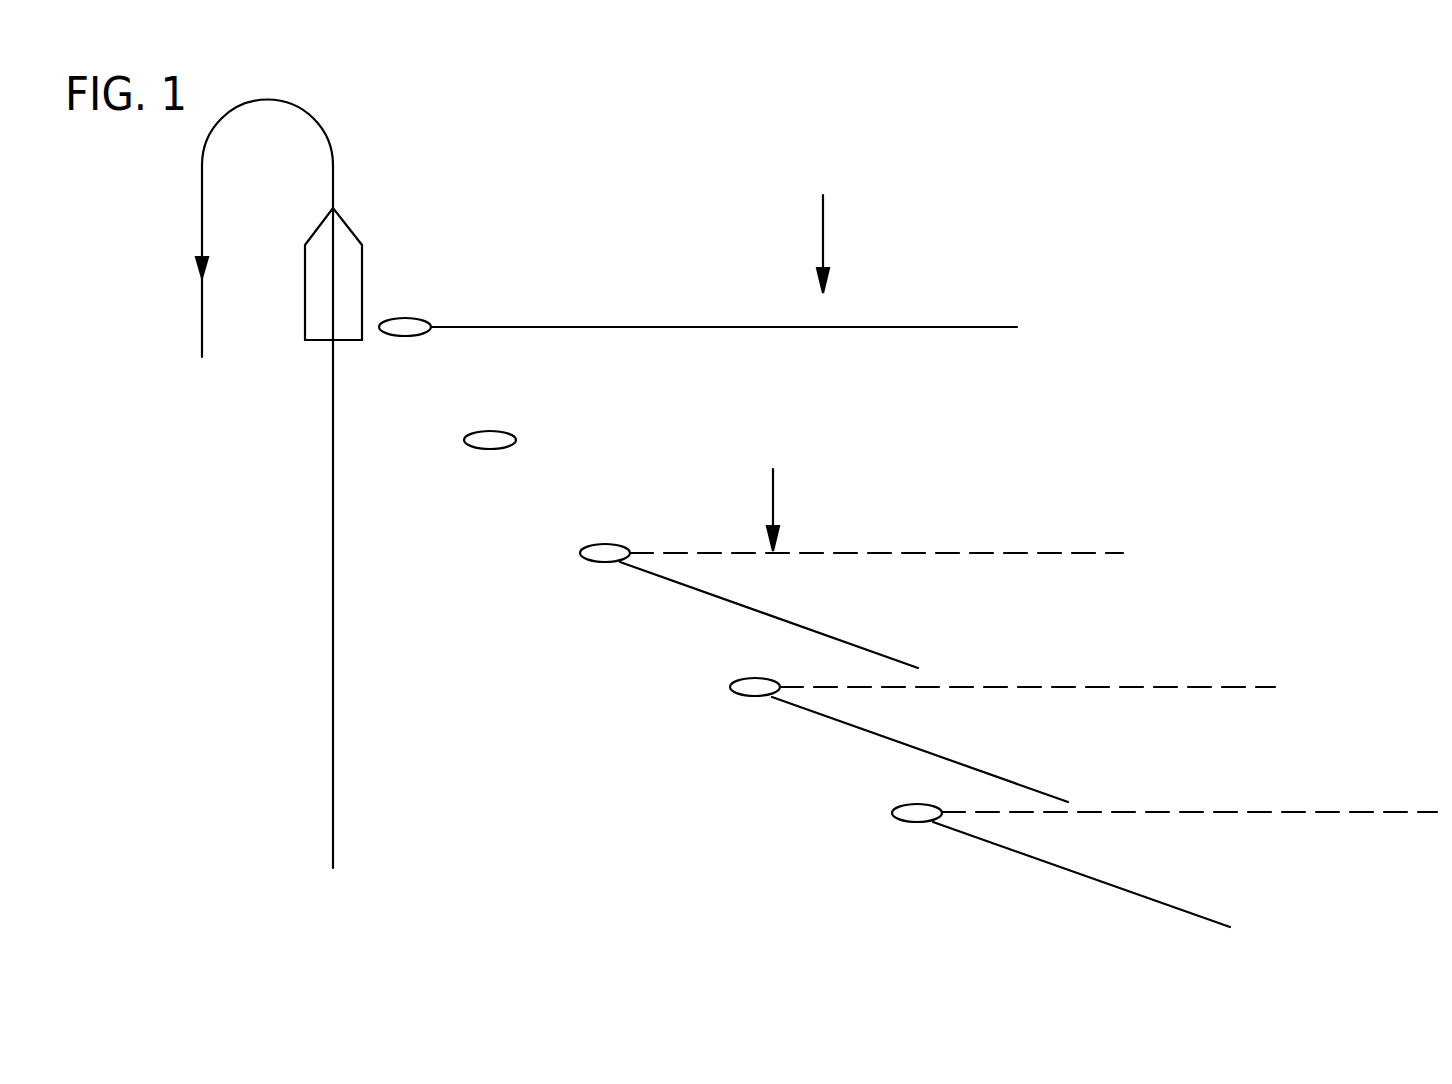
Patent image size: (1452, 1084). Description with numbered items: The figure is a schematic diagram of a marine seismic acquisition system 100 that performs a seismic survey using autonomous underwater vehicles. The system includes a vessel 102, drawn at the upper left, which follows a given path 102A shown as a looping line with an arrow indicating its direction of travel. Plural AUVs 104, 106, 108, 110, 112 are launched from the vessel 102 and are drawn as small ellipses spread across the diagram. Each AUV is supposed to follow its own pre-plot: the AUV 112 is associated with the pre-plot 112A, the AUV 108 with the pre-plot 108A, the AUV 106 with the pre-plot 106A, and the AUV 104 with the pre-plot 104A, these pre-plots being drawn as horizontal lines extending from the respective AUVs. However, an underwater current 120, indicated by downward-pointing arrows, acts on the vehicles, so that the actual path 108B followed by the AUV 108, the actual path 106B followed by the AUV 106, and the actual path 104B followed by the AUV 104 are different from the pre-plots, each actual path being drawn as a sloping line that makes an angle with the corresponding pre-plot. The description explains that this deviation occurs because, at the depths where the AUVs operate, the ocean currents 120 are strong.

The marine seismic acquisition system 100 is at (803, 113).
The vessel 102 is at (362, 245).
The path 102A is at (317, 122).
The AUV 104 is at (907, 822).
The pre-plot 104A is at (1332, 812).
The actual path 104B is at (1110, 883).
The AUV 106 is at (740, 697).
The pre-plot 106A is at (1187, 687).
The actual path 106B is at (942, 755).
The AUV 108 is at (597, 563).
The pre-plot 108A is at (990, 553).
The actual path 108B is at (823, 632).
The AUV 110 is at (485, 450).
The AUV 112 is at (410, 337).
The pre-plot 112A is at (940, 327).
The underwater current 120 is at (823, 207).